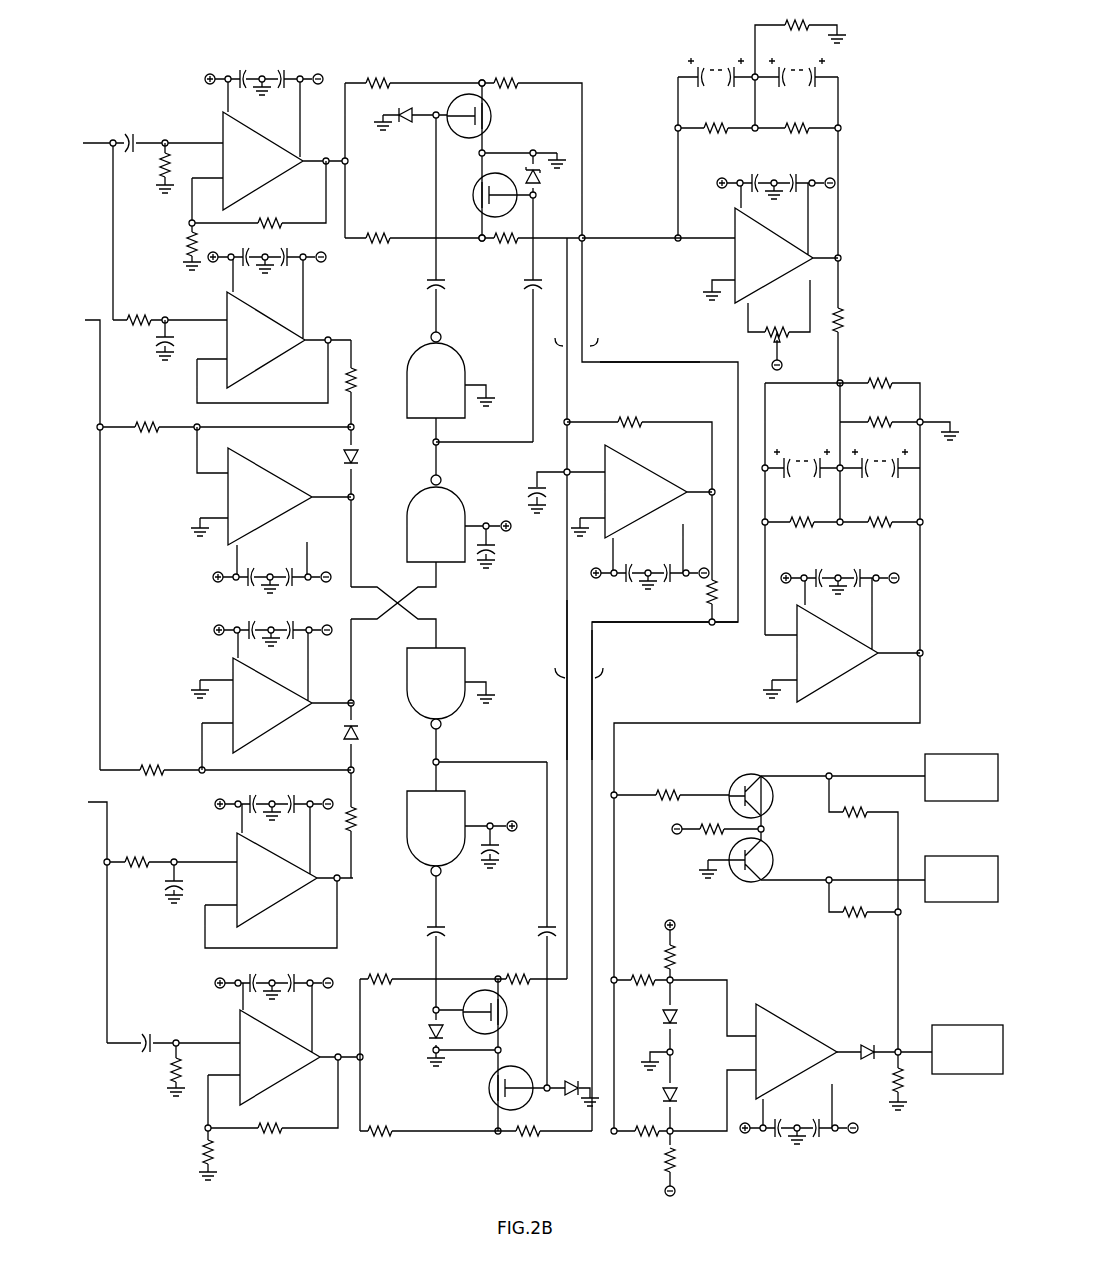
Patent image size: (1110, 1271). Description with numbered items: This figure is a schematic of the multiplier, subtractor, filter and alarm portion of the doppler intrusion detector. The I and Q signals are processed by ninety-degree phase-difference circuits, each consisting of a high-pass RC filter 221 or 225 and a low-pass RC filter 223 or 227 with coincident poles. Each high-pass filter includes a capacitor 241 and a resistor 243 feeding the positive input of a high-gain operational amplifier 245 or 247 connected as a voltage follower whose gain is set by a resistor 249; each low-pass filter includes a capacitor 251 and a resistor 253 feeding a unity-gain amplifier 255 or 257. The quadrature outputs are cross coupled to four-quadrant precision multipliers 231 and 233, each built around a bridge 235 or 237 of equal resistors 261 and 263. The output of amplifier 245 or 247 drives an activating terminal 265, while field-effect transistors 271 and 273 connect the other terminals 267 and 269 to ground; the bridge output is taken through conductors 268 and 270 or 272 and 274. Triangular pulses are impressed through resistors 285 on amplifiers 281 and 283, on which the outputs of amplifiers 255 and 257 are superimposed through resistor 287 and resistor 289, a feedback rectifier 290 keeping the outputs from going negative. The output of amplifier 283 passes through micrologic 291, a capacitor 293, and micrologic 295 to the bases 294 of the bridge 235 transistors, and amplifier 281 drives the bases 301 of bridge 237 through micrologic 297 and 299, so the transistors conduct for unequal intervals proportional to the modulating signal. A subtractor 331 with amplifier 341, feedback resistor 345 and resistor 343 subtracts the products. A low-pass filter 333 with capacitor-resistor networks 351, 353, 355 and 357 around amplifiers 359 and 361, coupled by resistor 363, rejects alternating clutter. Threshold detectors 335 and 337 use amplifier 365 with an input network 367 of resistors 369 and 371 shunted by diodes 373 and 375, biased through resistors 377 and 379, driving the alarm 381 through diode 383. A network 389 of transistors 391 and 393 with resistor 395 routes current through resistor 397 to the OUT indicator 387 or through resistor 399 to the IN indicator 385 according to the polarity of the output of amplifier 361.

The high-pass RC filter 221 is at (153, 221).
The low-pass RC filter 223 is at (156, 534).
The high-pass RC filter 225 is at (173, 1050).
The low-pass RC filter 227 is at (162, 922).
The four-quadrant precision multiplier 231 is at (371, 587).
The four-quadrant precision multiplier 233 is at (467, 925).
The bridge 235 is at (541, 605).
The bridge 237 is at (479, 1055).
The capacitor 241 is at (140, 138).
The resistor 243 is at (174, 181).
The high-gain operational amplifier 245 is at (268, 140).
The high-gain operational amplifier 247 is at (284, 1039).
The resistor 249 is at (259, 221).
The capacitor 251 is at (179, 345).
The resistor 253 is at (142, 313).
The high-gain operational amplifier 255 is at (274, 325).
The high-gain operational amplifier 257 is at (279, 871).
The equal resistors 261 is at (389, 972).
The equal resistors 263 is at (509, 972).
The activating terminal 265 is at (347, 161).
The bridge terminal 267 is at (478, 80).
The conductor 268 is at (567, 404).
The bridge terminal 269 is at (481, 239).
The conductor 270 is at (606, 363).
The field-effect transistor 271 is at (483, 120).
The conductor 272 is at (566, 711).
The field-effect transistor 273 is at (473, 196).
The conductor 274 is at (593, 711).
The high-gain operational amplifier 281 is at (271, 510).
The high-gain operational amplifier 283 is at (272, 695).
The resistor 285 is at (153, 422).
The resistor 287 is at (357, 378).
The resistor 289 is at (358, 824).
The rectifier 290 is at (354, 450).
The low-power diode-transistor micrologic 291 is at (431, 556).
The capacitor 293 is at (451, 279).
The base 294 is at (523, 165).
The low-power diode-transistor micrologic 295 is at (470, 397).
The low-power diode-transistor micrologic 297 is at (477, 711).
The low-power diode-transistor micrologic 299 is at (462, 919).
The base 301 is at (442, 1036).
The subtractor 331 is at (633, 523).
The low-pass filter 333 is at (792, 575).
The incoming threshold detector 335 is at (807, 1055).
The outgoing threshold detector 337 is at (807, 1055).
The high-gain operational amplifier 341 is at (641, 517).
The resistor 343 is at (706, 596).
The resistor 345 is at (631, 415).
The capacitor-resistor network 351 is at (716, 84).
The capacitor-resistor network 353 is at (797, 84).
The capacitor-resistor network 355 is at (802, 476).
The capacitor-resistor network 357 is at (880, 476).
The high-gain operational amplifier 359 is at (710, 272).
The high-gain operational amplifier 361 is at (841, 635).
The resistor 363 is at (848, 324).
The high-gain operational amplifier 365 is at (795, 1062).
The input network 367 is at (642, 1037).
The resistor 369 is at (668, 962).
The resistor 371 is at (643, 1126).
The diode 373 is at (680, 1013).
The diode 375 is at (680, 1093).
The resistor 377 is at (674, 943).
The resistor 379 is at (675, 1160).
The alarm 381 is at (960, 1028).
The diode 383 is at (867, 1043).
The IN indicator 385 is at (960, 755).
The OUT indicator 387 is at (962, 855).
The network 389 is at (768, 912).
The transistor 391 is at (756, 771).
The transistor 393 is at (756, 882).
The resistor 395 is at (700, 815).
The resistor 397 is at (857, 922).
The resistor 399 is at (854, 810).